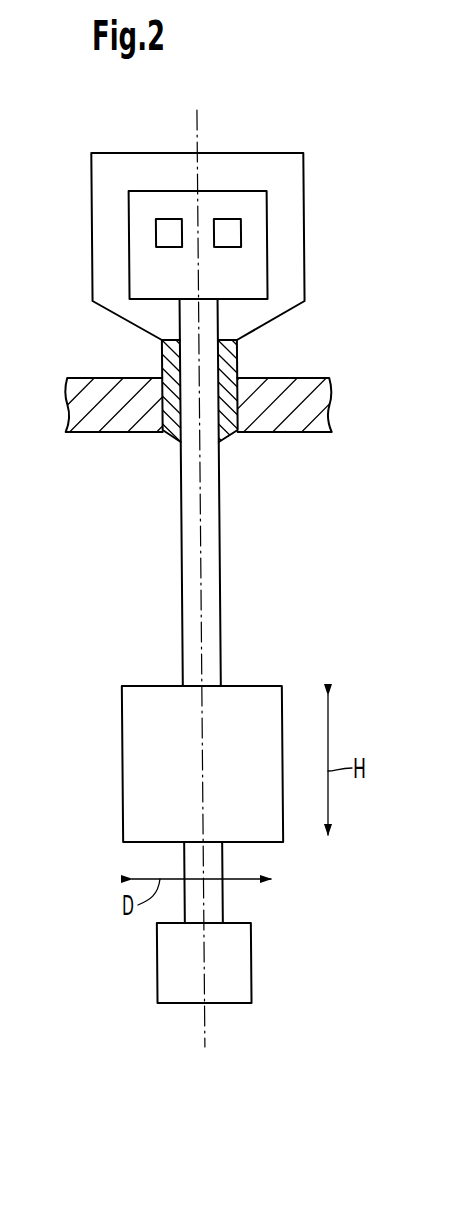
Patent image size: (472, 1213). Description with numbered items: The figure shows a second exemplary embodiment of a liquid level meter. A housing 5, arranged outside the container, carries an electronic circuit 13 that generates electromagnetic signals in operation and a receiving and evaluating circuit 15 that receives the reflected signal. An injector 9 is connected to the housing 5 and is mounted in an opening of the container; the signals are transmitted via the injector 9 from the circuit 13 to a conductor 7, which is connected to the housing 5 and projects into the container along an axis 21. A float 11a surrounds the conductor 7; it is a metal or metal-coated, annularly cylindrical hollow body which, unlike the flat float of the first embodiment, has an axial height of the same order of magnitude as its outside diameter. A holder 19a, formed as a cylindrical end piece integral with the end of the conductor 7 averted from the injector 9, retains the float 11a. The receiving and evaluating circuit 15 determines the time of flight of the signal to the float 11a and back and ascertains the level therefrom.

The housing 5 is at (103, 248).
The conductor 7 is at (183, 551).
The injector 9 is at (163, 372).
The float 11a is at (137, 754).
The electronic circuit 13 is at (230, 232).
The receiving and evaluating circuit 15 is at (165, 228).
The holder 19a is at (168, 983).
The axis 21 is at (198, 113).